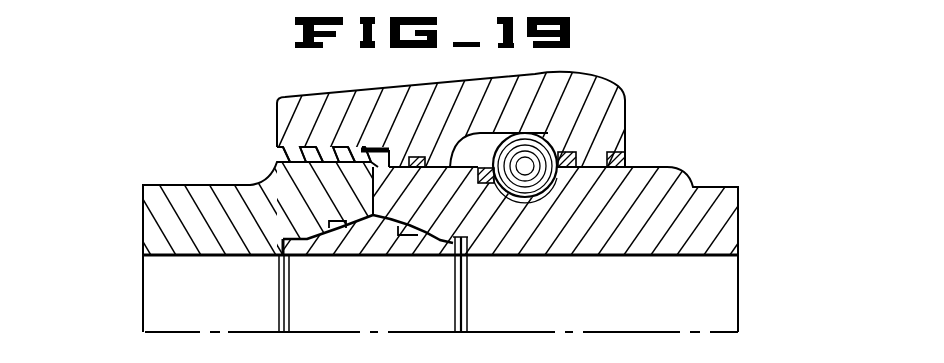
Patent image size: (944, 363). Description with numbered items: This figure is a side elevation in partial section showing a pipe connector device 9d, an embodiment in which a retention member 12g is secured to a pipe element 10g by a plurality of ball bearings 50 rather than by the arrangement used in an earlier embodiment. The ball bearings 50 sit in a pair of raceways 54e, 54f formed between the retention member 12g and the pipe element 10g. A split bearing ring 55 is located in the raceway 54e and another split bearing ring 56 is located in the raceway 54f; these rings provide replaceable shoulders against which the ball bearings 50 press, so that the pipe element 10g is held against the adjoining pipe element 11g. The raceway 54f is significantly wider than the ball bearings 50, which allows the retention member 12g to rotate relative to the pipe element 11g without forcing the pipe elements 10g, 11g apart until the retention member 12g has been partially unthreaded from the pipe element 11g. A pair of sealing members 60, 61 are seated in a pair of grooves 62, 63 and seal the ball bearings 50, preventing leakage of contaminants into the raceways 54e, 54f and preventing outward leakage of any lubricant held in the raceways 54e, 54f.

The pipe connector device 9d is at (733, 94).
The pipe element 10g is at (725, 212).
The pipe element 11g is at (163, 187).
The retention member 12g is at (300, 107).
The ball bearings 50 is at (543, 142).
The raceway 54e is at (533, 196).
The raceway 54f is at (460, 158).
The split bearing ring 55 is at (492, 183).
The split bearing ring 56 is at (575, 155).
The sealing member 60 is at (622, 155).
The sealing member 61 is at (420, 157).
The groove 62 is at (610, 158).
The groove 63 is at (420, 167).